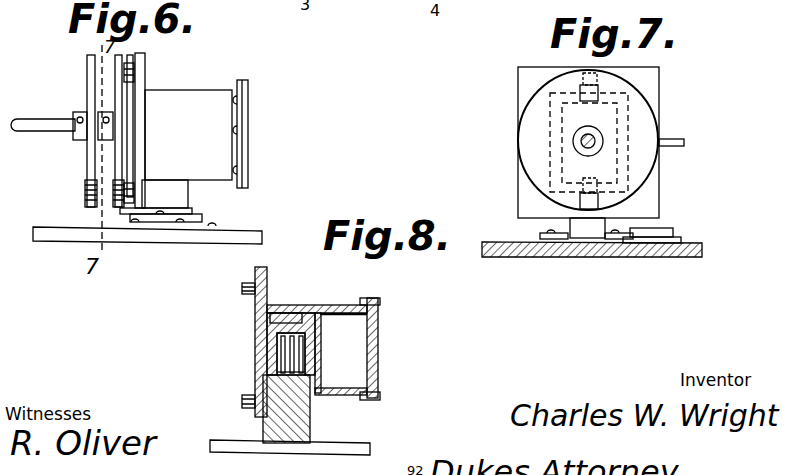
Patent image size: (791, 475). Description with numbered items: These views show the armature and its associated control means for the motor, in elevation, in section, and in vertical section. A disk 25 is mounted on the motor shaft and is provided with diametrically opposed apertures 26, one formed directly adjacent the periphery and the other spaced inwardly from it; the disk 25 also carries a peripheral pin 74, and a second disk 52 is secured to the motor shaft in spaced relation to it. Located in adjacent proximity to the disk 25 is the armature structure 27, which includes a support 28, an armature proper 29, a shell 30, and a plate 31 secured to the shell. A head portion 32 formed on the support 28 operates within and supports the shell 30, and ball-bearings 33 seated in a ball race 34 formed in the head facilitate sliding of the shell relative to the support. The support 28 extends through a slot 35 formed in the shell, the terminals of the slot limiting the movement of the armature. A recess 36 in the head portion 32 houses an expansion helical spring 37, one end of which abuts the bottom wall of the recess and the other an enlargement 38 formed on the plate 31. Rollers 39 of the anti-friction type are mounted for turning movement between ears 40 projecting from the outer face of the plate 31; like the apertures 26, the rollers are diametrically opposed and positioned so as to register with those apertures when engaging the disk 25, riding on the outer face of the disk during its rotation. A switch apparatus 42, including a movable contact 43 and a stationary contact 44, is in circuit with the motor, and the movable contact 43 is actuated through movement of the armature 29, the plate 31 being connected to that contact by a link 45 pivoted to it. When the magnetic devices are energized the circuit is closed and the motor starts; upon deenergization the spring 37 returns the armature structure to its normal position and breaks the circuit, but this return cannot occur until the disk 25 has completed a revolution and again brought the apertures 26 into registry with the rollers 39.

In FIG. 6, the disk 25 is at (120, 97).
In FIG. 7, the apertures 26 is at (598, 95).
In FIG. 6, the armature structure 27 is at (232, 50).
In FIG. 6, the support 28 is at (178, 192).
In FIG. 7, the support 28 is at (578, 225).
In FIG. 8, the support 28 is at (300, 430).
In FIG. 6, the armature proper 29 is at (246, 137).
In FIG. 8, the armature proper 29 is at (380, 350).
In FIG. 6, the shell 30 is at (188, 135).
In FIG. 8, the shell 30 is at (348, 305).
In FIG. 6, the plate 31 is at (135, 165).
In FIG. 7, the plate 31 is at (643, 89).
In FIG. 8, the plate 31 is at (262, 326).
In FIG. 8, the head portion 32 is at (298, 305).
In FIG. 8, the ball-bearings 33 is at (282, 318).
In FIG. 8, the ball race 34 is at (312, 322).
In FIG. 8, the slot 35 is at (335, 390).
In FIG. 8, the recess 36 is at (262, 346).
In FIG. 8, the expansion helical spring 37 is at (283, 354).
In FIG. 8, the enlargement 38 is at (288, 366).
In FIG. 6, the rollers 39 is at (127, 73).
In FIG. 7, the rollers 39 is at (582, 79).
In FIG. 8, the rollers 39 is at (246, 400).
In FIG. 8, the ears 40 is at (250, 282).
In FIG. 6, the switch apparatus 42 is at (224, 231).
In FIG. 7, the switch apparatus 42 is at (690, 243).
In FIG. 8, the switch apparatus 42 is at (290, 447).
In FIG. 6, the movable contact 43 is at (153, 211).
In FIG. 7, the movable contact 43 is at (637, 230).
In FIG. 6, the stationary contact 44 is at (178, 218).
In FIG. 7, the stationary contact 44 is at (637, 235).
In FIG. 7, the link 45 is at (646, 229).
In FIG. 6, the disk 52 is at (85, 180).
In FIG. 7, the peripheral pin 74 is at (685, 142).